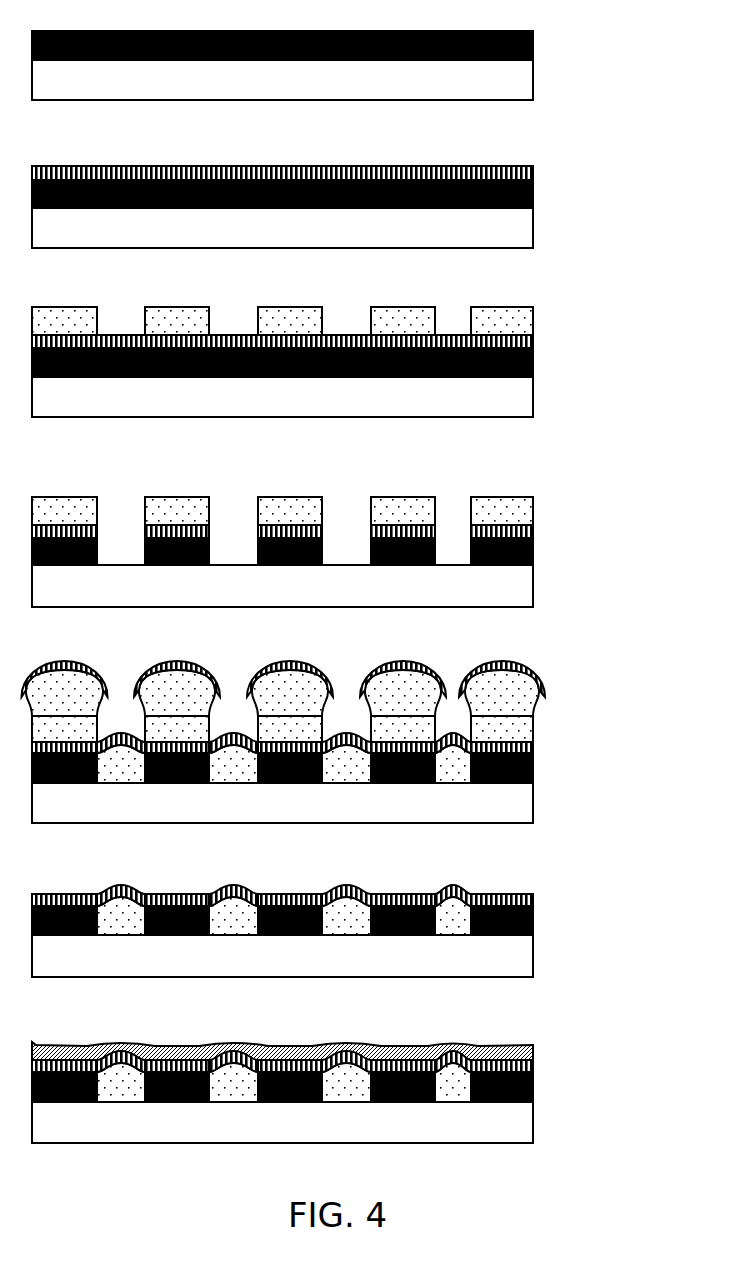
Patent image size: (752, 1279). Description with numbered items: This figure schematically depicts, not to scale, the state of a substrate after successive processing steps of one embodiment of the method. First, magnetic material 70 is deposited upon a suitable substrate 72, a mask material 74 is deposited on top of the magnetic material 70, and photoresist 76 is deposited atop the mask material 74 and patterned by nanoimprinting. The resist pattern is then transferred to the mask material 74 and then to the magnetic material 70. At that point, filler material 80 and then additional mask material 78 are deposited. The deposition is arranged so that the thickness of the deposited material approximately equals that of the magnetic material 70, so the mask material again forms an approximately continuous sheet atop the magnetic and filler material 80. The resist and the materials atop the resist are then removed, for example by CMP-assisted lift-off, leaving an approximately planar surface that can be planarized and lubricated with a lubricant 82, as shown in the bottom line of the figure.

The magnetic material 70 is at (547, 42).
The substrate 72 is at (547, 82).
The mask material 74 is at (547, 170).
The photoresist 76 is at (547, 320).
The additional mask material 78 is at (558, 677).
The filler material 80 is at (558, 710).
The lubricant 82 is at (559, 1049).